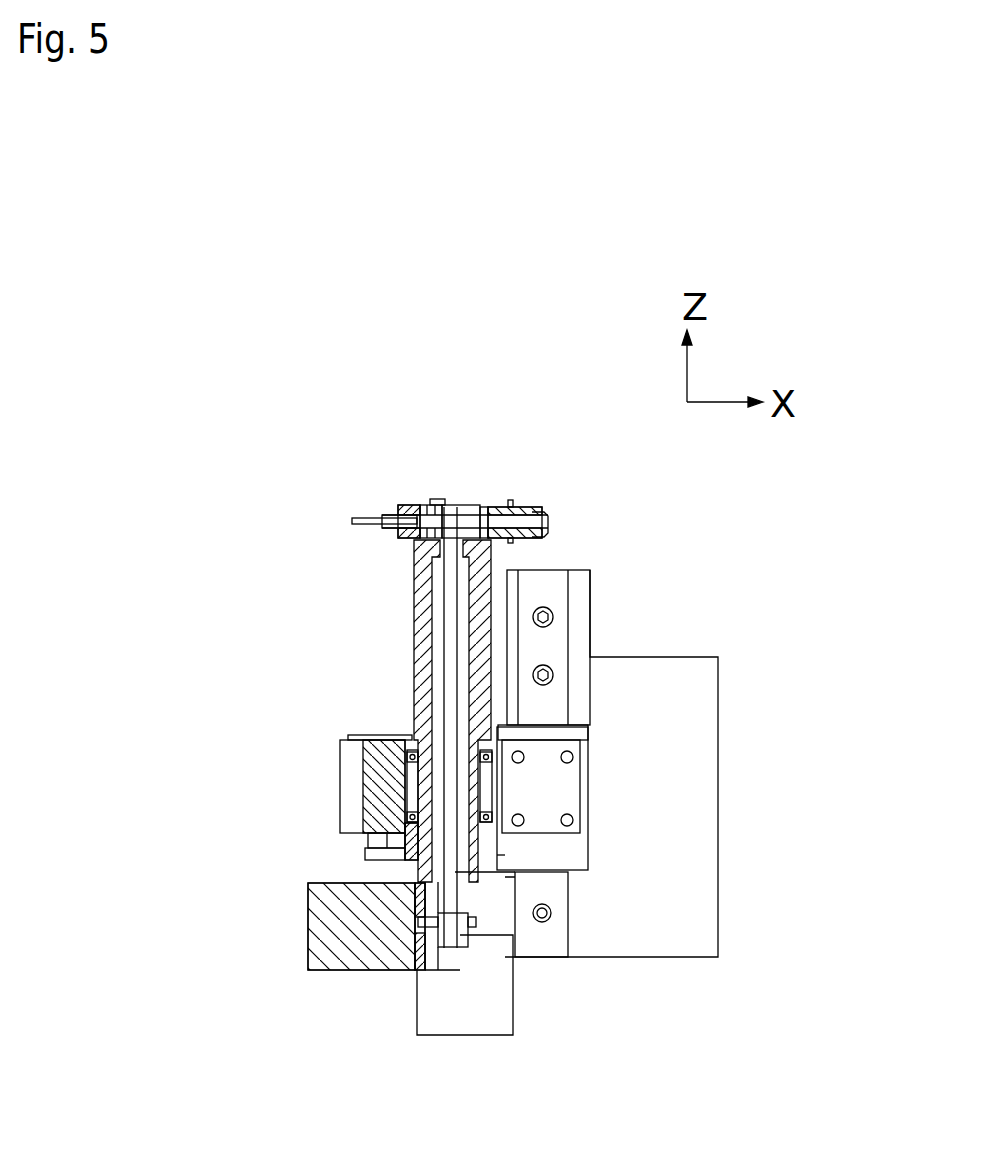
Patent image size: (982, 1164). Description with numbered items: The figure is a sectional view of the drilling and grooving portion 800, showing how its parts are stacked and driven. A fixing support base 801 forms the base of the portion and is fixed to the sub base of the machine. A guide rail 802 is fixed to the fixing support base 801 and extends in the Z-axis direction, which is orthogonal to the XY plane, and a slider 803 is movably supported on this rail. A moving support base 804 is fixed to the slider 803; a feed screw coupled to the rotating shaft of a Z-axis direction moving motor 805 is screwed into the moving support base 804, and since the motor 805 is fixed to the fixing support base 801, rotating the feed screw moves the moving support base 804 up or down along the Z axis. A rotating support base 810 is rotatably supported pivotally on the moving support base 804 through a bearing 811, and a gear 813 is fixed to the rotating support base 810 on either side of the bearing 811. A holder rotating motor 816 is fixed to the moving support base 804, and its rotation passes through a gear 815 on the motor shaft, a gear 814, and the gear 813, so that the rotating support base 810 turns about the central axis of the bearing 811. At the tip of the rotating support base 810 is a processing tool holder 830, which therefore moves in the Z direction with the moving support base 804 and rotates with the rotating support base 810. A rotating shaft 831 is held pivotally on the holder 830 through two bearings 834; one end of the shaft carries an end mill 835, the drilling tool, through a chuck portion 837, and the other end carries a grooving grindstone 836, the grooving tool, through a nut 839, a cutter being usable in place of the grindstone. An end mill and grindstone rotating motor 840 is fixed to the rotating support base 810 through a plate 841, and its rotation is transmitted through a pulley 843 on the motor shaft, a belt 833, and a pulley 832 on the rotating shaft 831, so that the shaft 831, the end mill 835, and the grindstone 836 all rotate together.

The drilling and grooving portion 800 is at (223, 417).
The fixing support base 801 is at (707, 685).
The guide rail 802 is at (557, 590).
The slider 803 is at (577, 853).
The moving support base 804 is at (565, 783).
The Z-axis direction moving motor 805 is at (480, 1028).
The rotating support base 810 is at (418, 670).
The bearing 811 is at (413, 757).
The gear 813 is at (503, 855).
The gear 814 is at (382, 860).
The gear 815 is at (368, 855).
The holder rotating motor 816 is at (347, 758).
The processing tool holder 830 is at (447, 383).
The rotating shaft 831 is at (435, 506).
The pulley 832 is at (463, 508).
The belt 833 is at (447, 620).
The bearings 834 is at (430, 508).
The end mill 835 is at (352, 521).
The grooving grindstone 836 is at (512, 505).
The chuck portion 837 is at (397, 508).
The nut 839 is at (548, 528).
The end mill and grindstone rotating motor 840 is at (328, 965).
The plate 841 is at (418, 970).
The pulley 843 is at (463, 940).